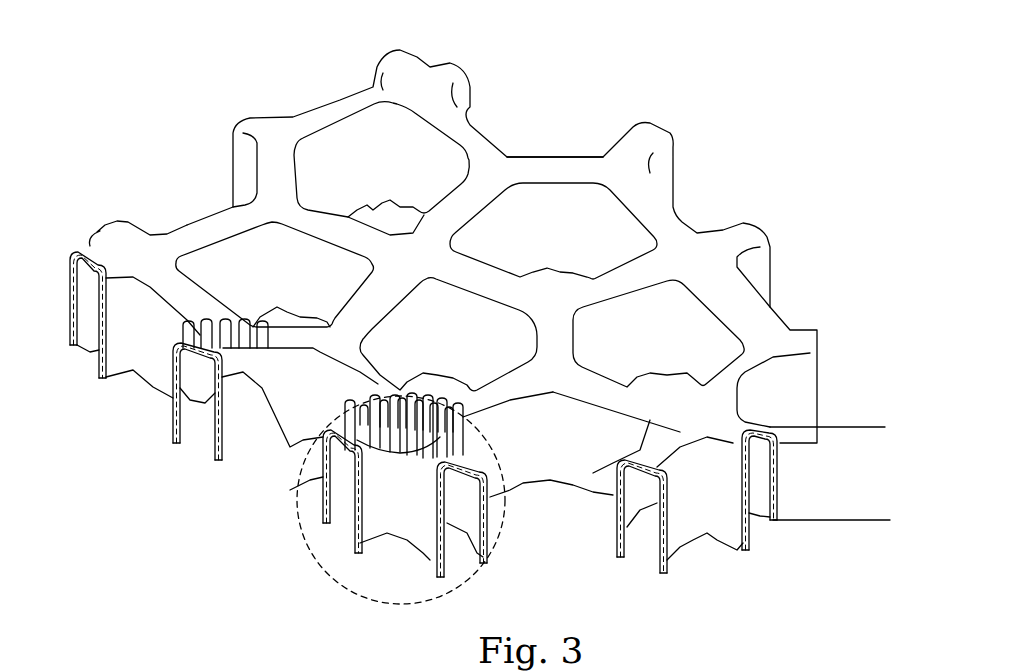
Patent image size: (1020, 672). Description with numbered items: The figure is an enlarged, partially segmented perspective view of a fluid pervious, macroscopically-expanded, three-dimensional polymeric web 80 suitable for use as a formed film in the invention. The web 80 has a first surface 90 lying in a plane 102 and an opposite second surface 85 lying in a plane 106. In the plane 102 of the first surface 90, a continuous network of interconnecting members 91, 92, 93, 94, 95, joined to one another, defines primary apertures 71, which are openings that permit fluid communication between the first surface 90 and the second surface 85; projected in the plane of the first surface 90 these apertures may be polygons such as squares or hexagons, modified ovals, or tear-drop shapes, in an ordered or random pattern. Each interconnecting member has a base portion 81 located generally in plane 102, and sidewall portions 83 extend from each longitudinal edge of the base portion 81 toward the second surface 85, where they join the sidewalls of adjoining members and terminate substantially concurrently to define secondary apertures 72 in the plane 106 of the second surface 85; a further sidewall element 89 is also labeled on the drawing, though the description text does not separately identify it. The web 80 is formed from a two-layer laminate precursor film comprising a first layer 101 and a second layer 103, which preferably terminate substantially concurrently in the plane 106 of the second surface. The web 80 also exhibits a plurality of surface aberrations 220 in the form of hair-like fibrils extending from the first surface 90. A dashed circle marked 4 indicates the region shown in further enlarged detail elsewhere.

The polymeric web 80 is at (218, 151).
The primary apertures 71 is at (306, 264).
The secondary apertures 72 is at (384, 223).
The first surface 90 is at (479, 176).
The interconnecting member 91 is at (675, 258).
The interconnecting member 92 is at (766, 326).
The interconnecting member 93 is at (759, 345).
The interconnecting member 94 is at (665, 409).
The interconnecting member 95 is at (555, 309).
The base portion 81 is at (415, 468).
The sidewall portions 83 is at (487, 530).
The second surface 85 is at (707, 540).
The strap 89 is at (588, 505).
The first layer 101 is at (172, 428).
The second layer 103 is at (170, 378).
The plane of first surface 102 is at (851, 422).
The plane of second surface 106 is at (824, 514).
The surface aberrations 220 is at (437, 445).
The detail circle FIG. 4 is at (401, 531).